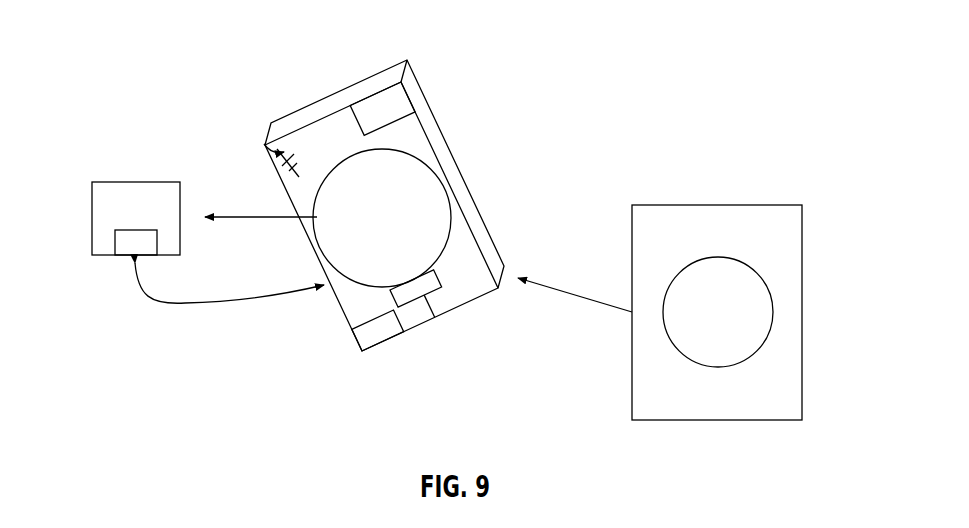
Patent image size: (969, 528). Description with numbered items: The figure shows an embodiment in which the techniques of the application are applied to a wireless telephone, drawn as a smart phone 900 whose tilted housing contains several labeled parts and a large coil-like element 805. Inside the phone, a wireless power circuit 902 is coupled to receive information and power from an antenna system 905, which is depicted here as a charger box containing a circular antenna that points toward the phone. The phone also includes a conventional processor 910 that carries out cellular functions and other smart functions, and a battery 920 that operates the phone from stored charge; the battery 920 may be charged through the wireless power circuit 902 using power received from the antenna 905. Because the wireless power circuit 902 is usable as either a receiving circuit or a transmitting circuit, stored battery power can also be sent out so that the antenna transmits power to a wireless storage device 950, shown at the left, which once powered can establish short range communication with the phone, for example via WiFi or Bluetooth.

The smart phone 900 is at (432, 130).
The coil / antenna 805 is at (432, 190).
The wireless power circuit 902 is at (353, 108).
The processor 910 is at (354, 332).
The battery 920 is at (264, 144).
The wireless storage device 950 is at (108, 182).
The antenna system 905 is at (767, 204).